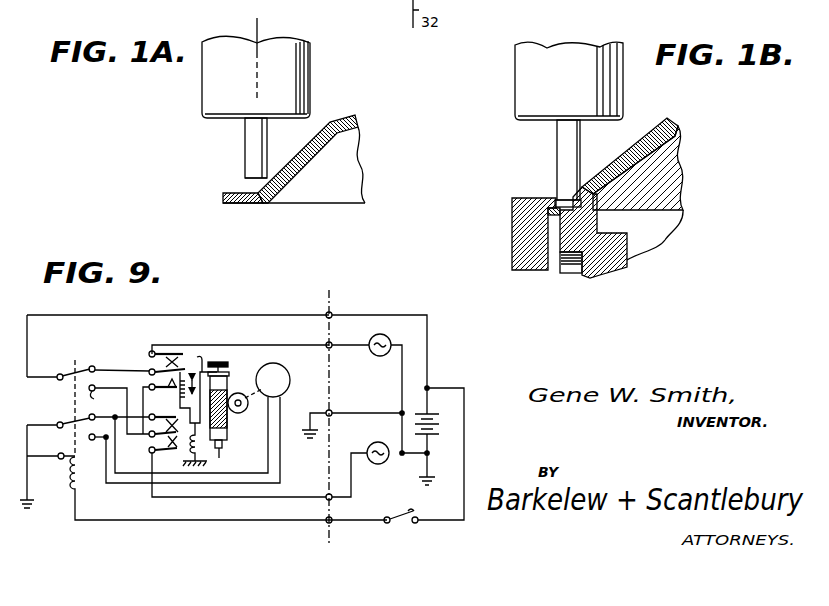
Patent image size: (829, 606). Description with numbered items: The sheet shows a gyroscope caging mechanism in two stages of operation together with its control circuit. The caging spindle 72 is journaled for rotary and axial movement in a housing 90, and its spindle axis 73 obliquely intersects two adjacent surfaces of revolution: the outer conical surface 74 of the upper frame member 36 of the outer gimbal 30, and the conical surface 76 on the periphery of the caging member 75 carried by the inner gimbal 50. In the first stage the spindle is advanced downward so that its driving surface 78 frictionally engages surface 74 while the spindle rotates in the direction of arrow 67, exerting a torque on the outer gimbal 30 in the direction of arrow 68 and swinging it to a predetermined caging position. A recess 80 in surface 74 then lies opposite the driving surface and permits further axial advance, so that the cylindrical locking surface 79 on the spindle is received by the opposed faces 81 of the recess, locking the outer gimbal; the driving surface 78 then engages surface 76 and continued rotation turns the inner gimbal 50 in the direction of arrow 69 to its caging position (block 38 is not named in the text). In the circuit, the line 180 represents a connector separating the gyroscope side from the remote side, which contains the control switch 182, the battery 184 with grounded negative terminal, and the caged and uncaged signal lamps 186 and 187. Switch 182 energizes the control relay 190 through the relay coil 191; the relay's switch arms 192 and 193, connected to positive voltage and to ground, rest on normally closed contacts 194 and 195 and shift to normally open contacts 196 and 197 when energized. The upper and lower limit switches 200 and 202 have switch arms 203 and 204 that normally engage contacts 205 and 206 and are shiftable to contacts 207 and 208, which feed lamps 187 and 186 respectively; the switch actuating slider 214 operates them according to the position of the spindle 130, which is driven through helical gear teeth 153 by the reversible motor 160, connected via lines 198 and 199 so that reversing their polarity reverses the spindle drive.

In FIG. 1A, the outer gimbal 30 is at (368, 173).
In FIG. 1B, the outer gimbal 30 is at (681, 185).
In FIG. 1A, the upper frame member 36 is at (300, 193).
In FIG. 1B, the support block 38 is at (513, 257).
In FIG. 1B, the inner gimbal 50 is at (631, 259).
In FIG. 1A, the arrow 67 is at (253, 150).
In FIG. 1B, the arrow 67 is at (565, 156).
In FIG. 1A, the arrow 68 is at (312, 150).
In FIG. 1B, the arrow 69 is at (620, 237).
In FIG. 1A, the caging spindle 72 is at (245, 128).
In FIG. 1B, the caging spindle 72 is at (560, 133).
In FIG. 1A, the spindle axis 73 is at (257, 58).
In FIG. 1A, the outer conical surface 74 is at (300, 142).
In FIG. 1B, the caging member 75 is at (593, 222).
In FIG. 1B, the conical surface 76 is at (603, 188).
In FIG. 1A, the driving surface 78 is at (243, 180).
In FIG. 1B, the driving surface 78 is at (555, 212).
In FIG. 1A, the locking surface 79 is at (245, 168).
In FIG. 1B, the locking surface 79 is at (560, 171).
In FIG. 1B, the recess 80 is at (556, 201).
In FIG. 1B, the opposed faces 81 is at (570, 196).
In FIG. 1A, the housing 90 is at (311, 92).
In FIG. 1B, the housing 90 is at (520, 96).
In FIG. 9, the spindle 130 is at (228, 380).
In FIG. 9, the helical gear teeth 153 is at (241, 413).
In FIG. 9, the reversible electric motor 160 is at (291, 376).
In FIG. 9, the line 180 is at (333, 306).
In FIG. 9, the control switch 182 is at (400, 523).
In FIG. 9, the battery 184 is at (452, 412).
In FIG. 9, the signal lamp 186 is at (370, 464).
In FIG. 9, the signal lamp 187 is at (373, 356).
In FIG. 9, the control relay 190 is at (62, 469).
In FIG. 9, the relay coil 191 is at (80, 484).
In FIG. 9, the switch arm 192 is at (63, 373).
In FIG. 9, the switch arm 193 is at (62, 418).
In FIG. 9, the normally closed contact 194 is at (119, 360).
In FIG. 9, the normally closed contact 195 is at (115, 410).
In FIG. 9, the normally open contact 196 is at (119, 409).
In FIG. 9, the normally open contact 197 is at (94, 447).
In FIG. 9, the line 198 is at (236, 473).
In FIG. 9, the line 199 is at (282, 473).
In FIG. 9, the upper limit switch 200 is at (220, 410).
In FIG. 9, the lower limit switch 202 is at (147, 461).
In FIG. 9, the switch arm 203 is at (184, 370).
In FIG. 9, the switch arm 204 is at (150, 440).
In FIG. 9, the normally closed contact 205 is at (167, 386).
In FIG. 9, the normally closed contact 206 is at (160, 416).
In FIG. 9, the normally open contact 207 is at (158, 352).
In FIG. 9, the normally open contact 208 is at (161, 453).
In FIG. 9, the switch actuating slider 214 is at (217, 359).